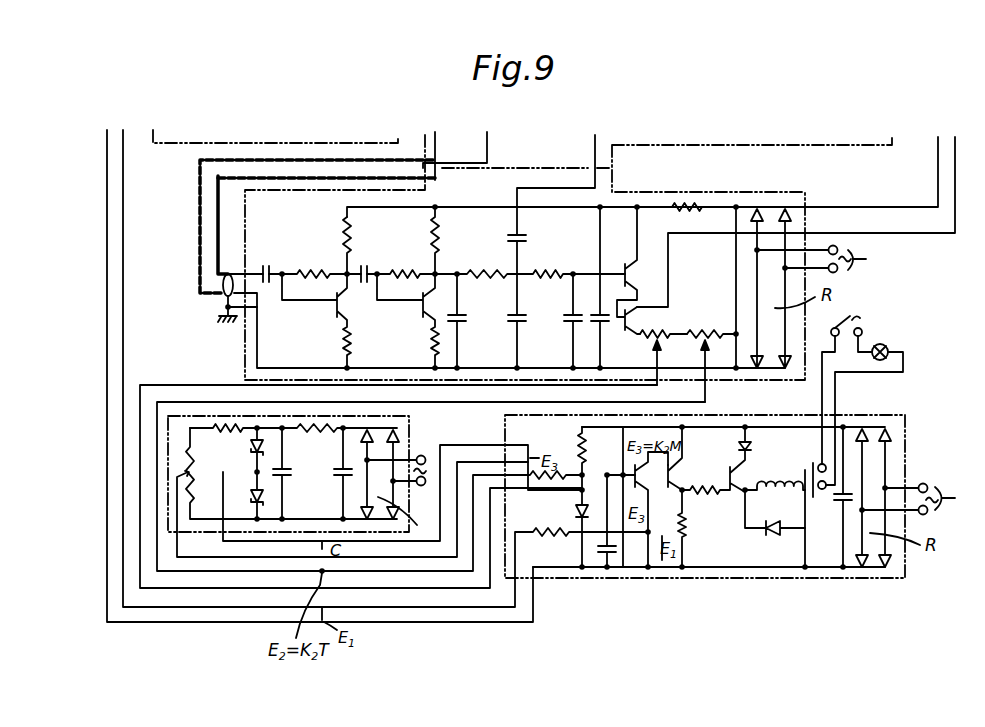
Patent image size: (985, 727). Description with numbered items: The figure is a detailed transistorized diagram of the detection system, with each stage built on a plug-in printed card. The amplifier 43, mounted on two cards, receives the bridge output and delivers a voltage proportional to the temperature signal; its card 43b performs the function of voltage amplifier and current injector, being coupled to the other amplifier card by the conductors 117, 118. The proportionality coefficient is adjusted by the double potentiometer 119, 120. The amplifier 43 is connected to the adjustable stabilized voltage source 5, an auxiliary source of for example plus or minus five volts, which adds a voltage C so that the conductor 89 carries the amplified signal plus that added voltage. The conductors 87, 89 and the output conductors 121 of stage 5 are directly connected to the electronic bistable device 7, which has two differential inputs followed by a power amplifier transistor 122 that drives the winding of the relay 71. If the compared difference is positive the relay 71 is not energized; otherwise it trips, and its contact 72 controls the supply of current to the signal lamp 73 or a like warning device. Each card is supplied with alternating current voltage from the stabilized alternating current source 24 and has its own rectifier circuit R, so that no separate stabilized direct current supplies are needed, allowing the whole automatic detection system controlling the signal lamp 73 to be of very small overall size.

The adjustable stabilized voltage source 5 is at (410, 496).
The electronic bistable device 7 is at (696, 580).
The stabilized alternating current source 24 is at (899, 382).
The amplifier 43 is at (733, 190).
The card 43b is at (686, 355).
The relay 71 is at (789, 480).
The contact 72 is at (815, 498).
The signal lamp 73 is at (884, 345).
The conductor 87 is at (183, 608).
The conductor 89 is at (656, 392).
The conductor 117 is at (200, 154).
The conductor 118 is at (216, 200).
The potentiometer 119 is at (660, 337).
The potentiometer 120 is at (707, 337).
The output conductors 121 is at (236, 541).
The power amplifier transistor 122 is at (740, 445).